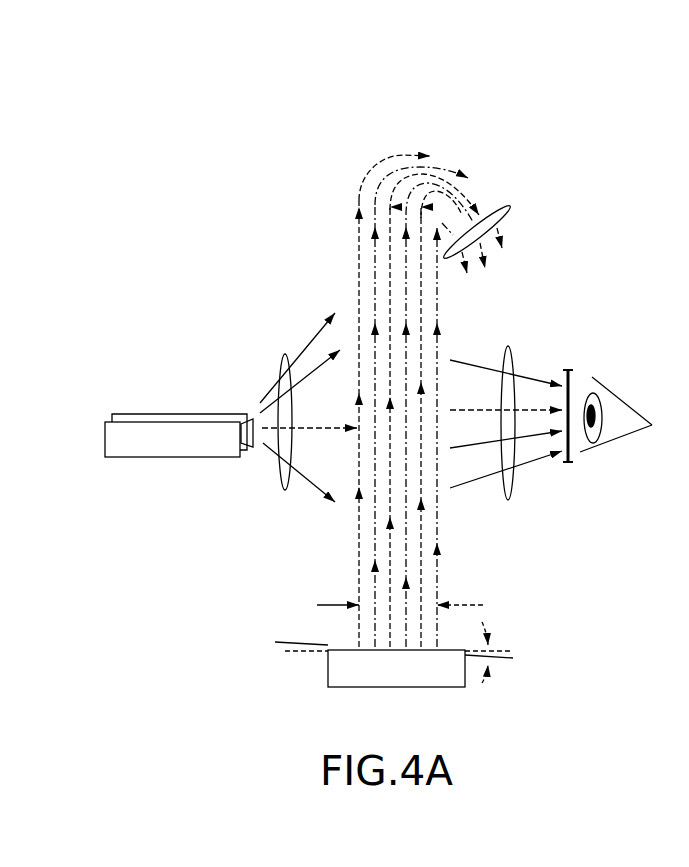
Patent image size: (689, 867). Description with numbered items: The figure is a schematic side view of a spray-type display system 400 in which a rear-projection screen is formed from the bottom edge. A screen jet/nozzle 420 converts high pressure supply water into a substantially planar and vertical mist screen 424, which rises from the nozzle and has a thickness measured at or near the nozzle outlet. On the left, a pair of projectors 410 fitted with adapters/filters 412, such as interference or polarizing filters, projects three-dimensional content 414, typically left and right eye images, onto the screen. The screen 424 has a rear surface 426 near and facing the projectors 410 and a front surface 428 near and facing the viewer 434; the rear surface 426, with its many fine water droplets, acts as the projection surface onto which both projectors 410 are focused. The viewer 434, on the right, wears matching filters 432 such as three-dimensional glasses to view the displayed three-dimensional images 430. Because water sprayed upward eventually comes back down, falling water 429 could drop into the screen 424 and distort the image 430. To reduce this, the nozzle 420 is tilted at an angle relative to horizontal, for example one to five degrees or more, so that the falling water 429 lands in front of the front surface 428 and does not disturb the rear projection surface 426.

The display system 400 is at (243, 268).
The projectors 410 is at (239, 455).
The adapters/filters 412 is at (253, 446).
The 3D content 414 is at (276, 375).
The screen jet/nozzle 420 is at (330, 701).
The mist screen 424 is at (440, 153).
The rear surface 426 is at (359, 530).
The front surface 428 is at (438, 508).
The falling water 429 is at (511, 213).
The 3D images 430 is at (511, 357).
The filters 432 is at (567, 464).
The viewer 434 is at (618, 447).